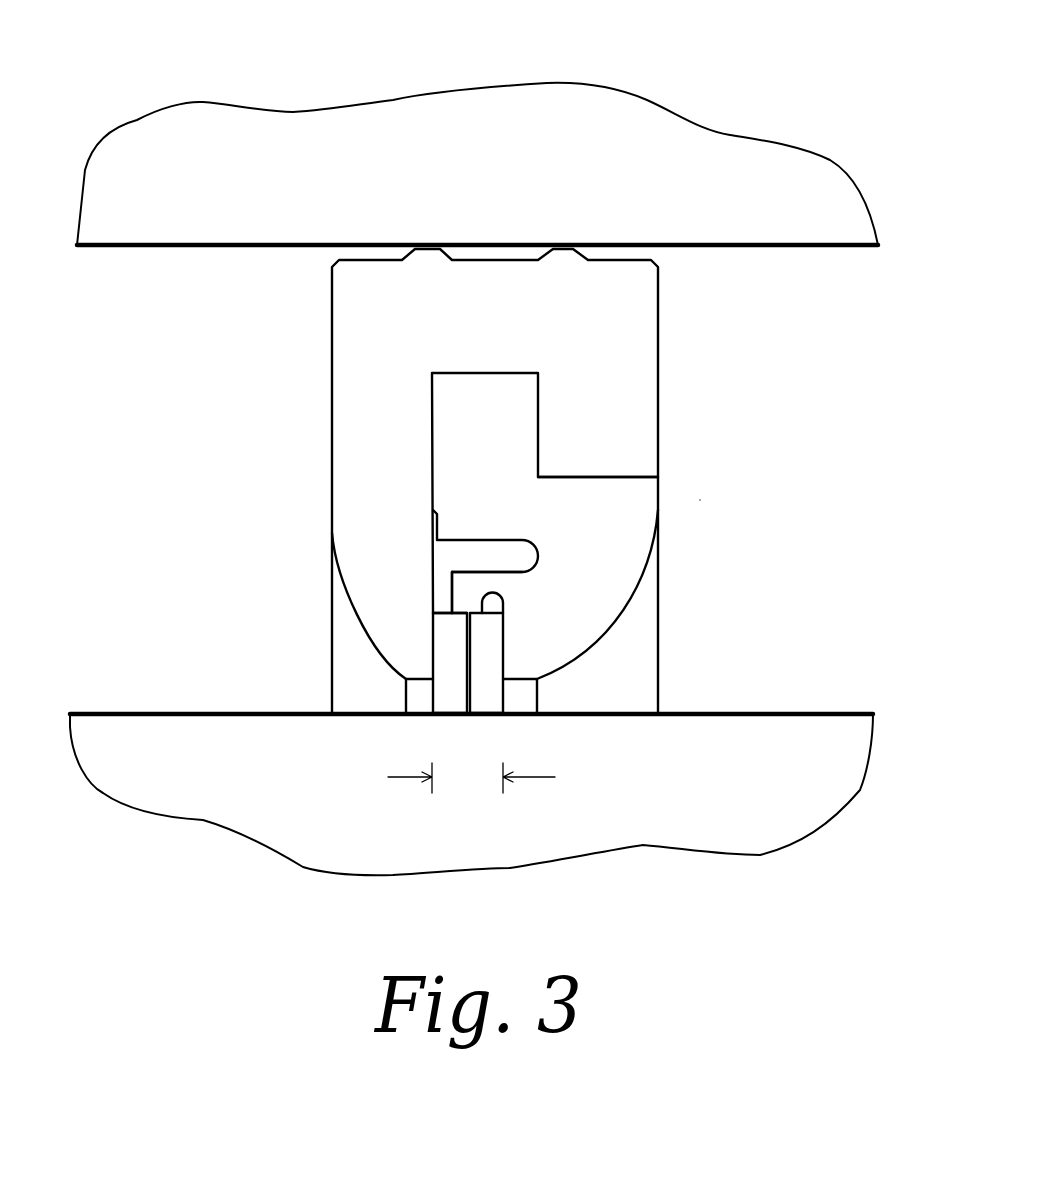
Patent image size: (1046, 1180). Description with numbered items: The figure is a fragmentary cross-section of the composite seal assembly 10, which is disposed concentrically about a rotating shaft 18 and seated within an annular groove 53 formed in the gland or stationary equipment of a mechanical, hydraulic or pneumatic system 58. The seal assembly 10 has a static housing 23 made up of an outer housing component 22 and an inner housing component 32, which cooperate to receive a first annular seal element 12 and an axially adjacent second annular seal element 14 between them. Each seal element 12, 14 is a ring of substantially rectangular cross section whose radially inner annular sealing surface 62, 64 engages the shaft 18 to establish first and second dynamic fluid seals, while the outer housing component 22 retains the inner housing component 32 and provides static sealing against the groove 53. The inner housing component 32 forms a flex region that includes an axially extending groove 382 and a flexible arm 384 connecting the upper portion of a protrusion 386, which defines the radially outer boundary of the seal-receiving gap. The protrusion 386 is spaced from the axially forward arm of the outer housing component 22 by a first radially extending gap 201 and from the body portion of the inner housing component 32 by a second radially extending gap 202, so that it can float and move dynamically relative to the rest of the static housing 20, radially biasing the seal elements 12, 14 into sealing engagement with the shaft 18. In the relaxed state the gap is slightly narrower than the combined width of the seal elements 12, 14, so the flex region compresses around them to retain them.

The seal assembly 10 is at (728, 93).
The mechanical, hydraulic or pneumatic system 58 is at (472, 183).
The rotating shaft 18 is at (340, 836).
The static housing 20 is at (276, 374).
The outer housing component 22 is at (612, 348).
The static housing 23 is at (675, 422).
The inner housing component 32 is at (602, 520).
The axially extending groove 382 is at (482, 558).
The protrusion 386 is at (467, 593).
The flexible arm 384 is at (492, 585).
The first radially extending gap 201 is at (438, 598).
The second radially extending gap 202 is at (493, 603).
The first annular seal element 12 is at (450, 693).
The second annular seal element 14 is at (488, 697).
The radially inner annular sealing surface 62 is at (448, 717).
The radially inner annular sealing surface 64 is at (490, 718).
The annular groove 53 is at (805, 578).